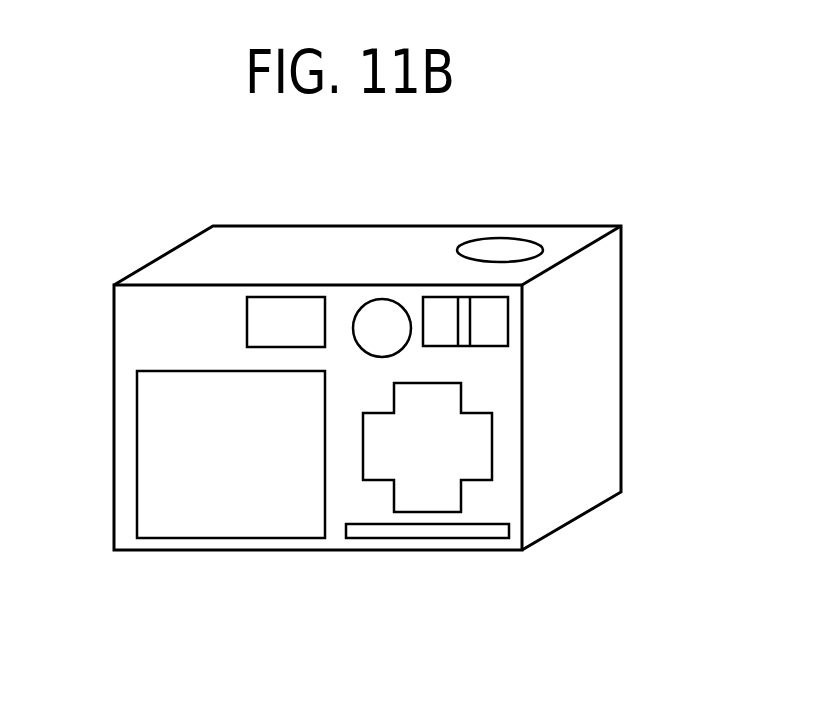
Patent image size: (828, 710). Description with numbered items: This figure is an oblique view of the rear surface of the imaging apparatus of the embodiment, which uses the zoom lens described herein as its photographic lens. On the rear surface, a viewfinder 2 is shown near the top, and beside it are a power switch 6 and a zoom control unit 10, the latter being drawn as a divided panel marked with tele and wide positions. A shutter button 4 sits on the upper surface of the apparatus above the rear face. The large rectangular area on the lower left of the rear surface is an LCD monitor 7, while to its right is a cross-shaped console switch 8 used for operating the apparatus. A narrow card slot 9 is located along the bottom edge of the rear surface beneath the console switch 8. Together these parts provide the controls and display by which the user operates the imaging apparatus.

The viewfinder 2 is at (279, 310).
The shutter button 4 is at (497, 244).
The power switch 6 is at (381, 310).
The LCD monitor 7 is at (150, 454).
The console switch 8 is at (478, 443).
The card slot 9 is at (483, 531).
The zoom control unit 10 is at (498, 320).